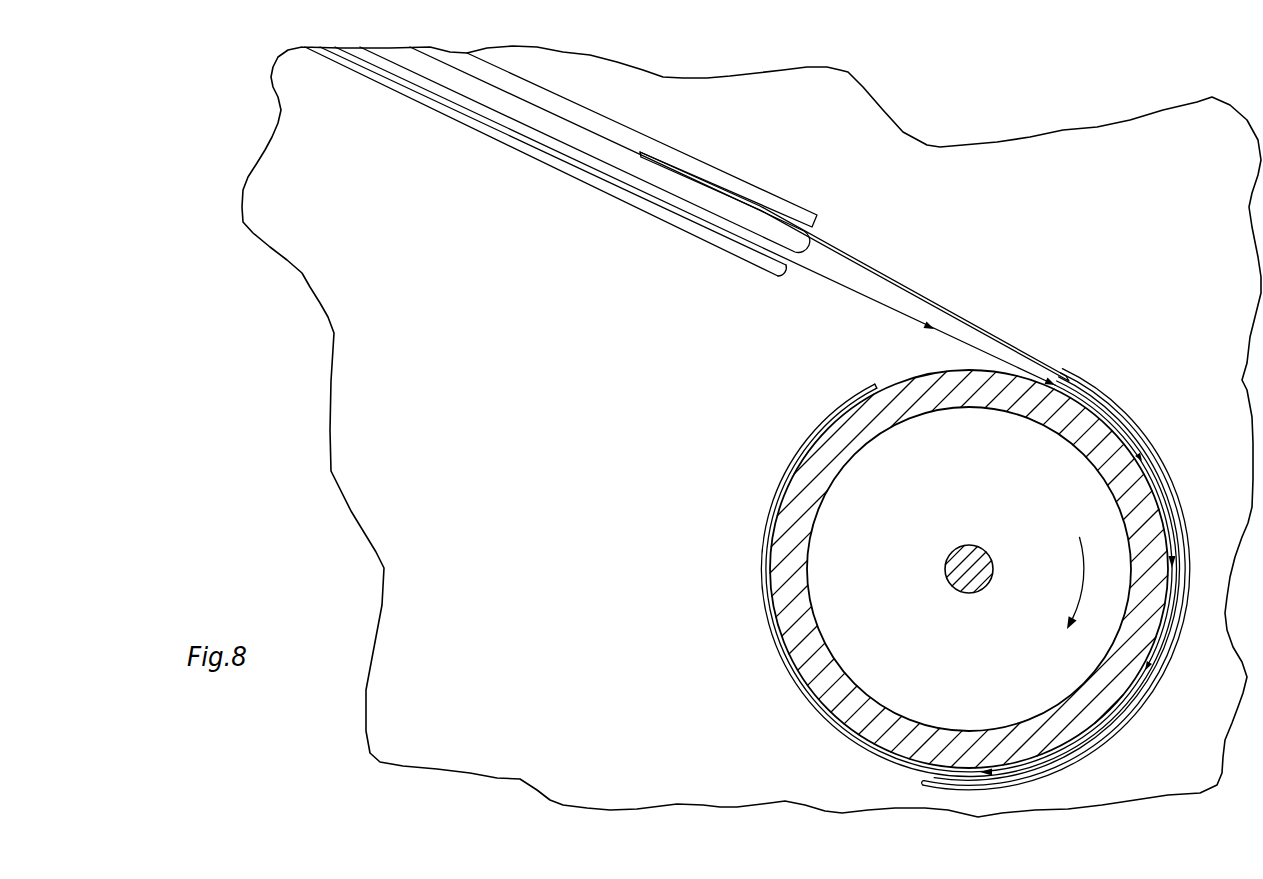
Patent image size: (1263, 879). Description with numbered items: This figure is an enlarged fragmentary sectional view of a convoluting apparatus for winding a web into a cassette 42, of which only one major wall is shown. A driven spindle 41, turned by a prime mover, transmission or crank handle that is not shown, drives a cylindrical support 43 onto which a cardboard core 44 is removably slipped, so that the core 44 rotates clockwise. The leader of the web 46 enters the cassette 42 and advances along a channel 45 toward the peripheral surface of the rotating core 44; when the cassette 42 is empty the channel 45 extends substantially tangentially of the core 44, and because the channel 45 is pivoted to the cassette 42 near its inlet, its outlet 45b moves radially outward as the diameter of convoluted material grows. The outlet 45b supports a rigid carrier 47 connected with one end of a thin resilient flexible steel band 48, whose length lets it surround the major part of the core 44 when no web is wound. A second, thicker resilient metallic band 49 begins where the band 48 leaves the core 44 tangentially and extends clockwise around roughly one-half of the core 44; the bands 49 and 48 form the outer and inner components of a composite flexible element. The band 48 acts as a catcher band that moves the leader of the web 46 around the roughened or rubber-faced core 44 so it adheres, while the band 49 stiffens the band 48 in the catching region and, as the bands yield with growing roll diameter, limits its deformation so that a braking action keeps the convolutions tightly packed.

The driven spindle 41 is at (968, 594).
The cassette 42 is at (480, 501).
The cylindrical support 43 is at (822, 586).
The core 44 is at (1082, 437).
The channel 45 is at (576, 181).
The outlet 45b is at (762, 266).
The web 46 is at (858, 292).
The rigid carrier 47 is at (641, 135).
The resilient flexible band 48 is at (943, 306).
The second resilient metallic band 49 is at (1172, 654).